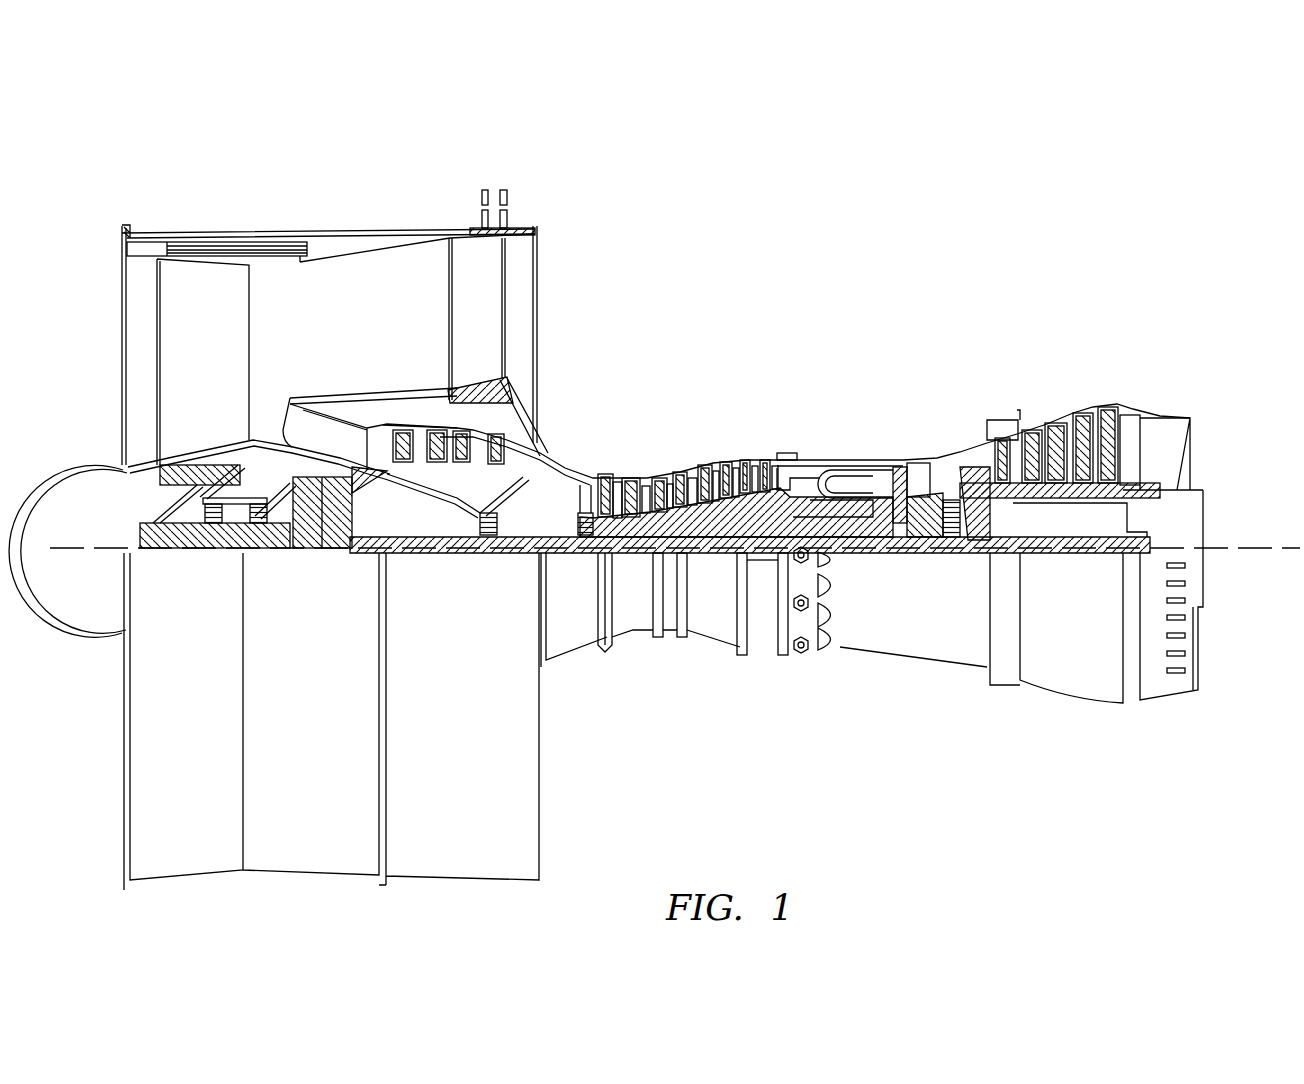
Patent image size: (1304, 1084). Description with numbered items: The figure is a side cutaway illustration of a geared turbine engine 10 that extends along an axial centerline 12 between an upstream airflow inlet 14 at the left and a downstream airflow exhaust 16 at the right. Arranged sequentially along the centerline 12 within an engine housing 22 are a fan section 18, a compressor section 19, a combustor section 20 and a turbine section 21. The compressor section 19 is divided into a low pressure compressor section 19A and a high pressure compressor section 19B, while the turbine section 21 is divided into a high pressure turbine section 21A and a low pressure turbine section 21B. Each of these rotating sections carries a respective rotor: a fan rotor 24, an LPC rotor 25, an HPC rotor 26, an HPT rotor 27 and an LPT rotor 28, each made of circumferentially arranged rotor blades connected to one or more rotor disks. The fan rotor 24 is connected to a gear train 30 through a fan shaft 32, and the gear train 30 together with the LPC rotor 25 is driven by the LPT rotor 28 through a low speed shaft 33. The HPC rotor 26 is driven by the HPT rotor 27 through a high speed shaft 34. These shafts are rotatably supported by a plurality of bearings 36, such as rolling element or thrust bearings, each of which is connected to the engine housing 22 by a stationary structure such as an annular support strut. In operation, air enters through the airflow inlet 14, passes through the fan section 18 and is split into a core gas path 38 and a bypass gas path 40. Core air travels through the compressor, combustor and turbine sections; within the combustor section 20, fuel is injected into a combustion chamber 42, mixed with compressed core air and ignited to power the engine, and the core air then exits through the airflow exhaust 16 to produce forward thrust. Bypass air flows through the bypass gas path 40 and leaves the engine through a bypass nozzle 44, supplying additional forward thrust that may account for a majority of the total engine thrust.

The geared turbine engine 10 is at (90, 208).
The axial centerline 12 is at (1265, 548).
The upstream airflow inlet 14 is at (121, 307).
The downstream airflow exhaust 16 is at (1193, 447).
The fan section 18 is at (307, 208).
The compressor section 19 is at (762, 145).
The low pressure compressor (LPC) section 19A is at (540, 193).
The high pressure compressor (HPC) section 19B is at (563, 388).
The combustor section 20 is at (780, 388).
The turbine section 21 is at (893, 317).
The high pressure turbine (HPT) section 21A is at (890, 388).
The low pressure turbine (LPT) section 21B is at (982, 388).
The engine housing 22 is at (555, 665).
The fan rotor 24 is at (127, 468).
The LPC rotor 25 is at (445, 510).
The HPC rotor 26 is at (715, 505).
The HPT rotor 27 is at (928, 555).
The LPT rotor 28 is at (1063, 507).
The gear train 30 is at (335, 550).
The fan shaft 32 is at (193, 553).
The low speed shaft 33 is at (757, 555).
The high speed shaft 34 is at (858, 556).
The bearings 36 is at (227, 560).
The core gas path 38 is at (558, 477).
The bypass gas path 40 is at (381, 323).
The combustion chamber 42 is at (842, 484).
The bypass nozzle 44 is at (538, 295).